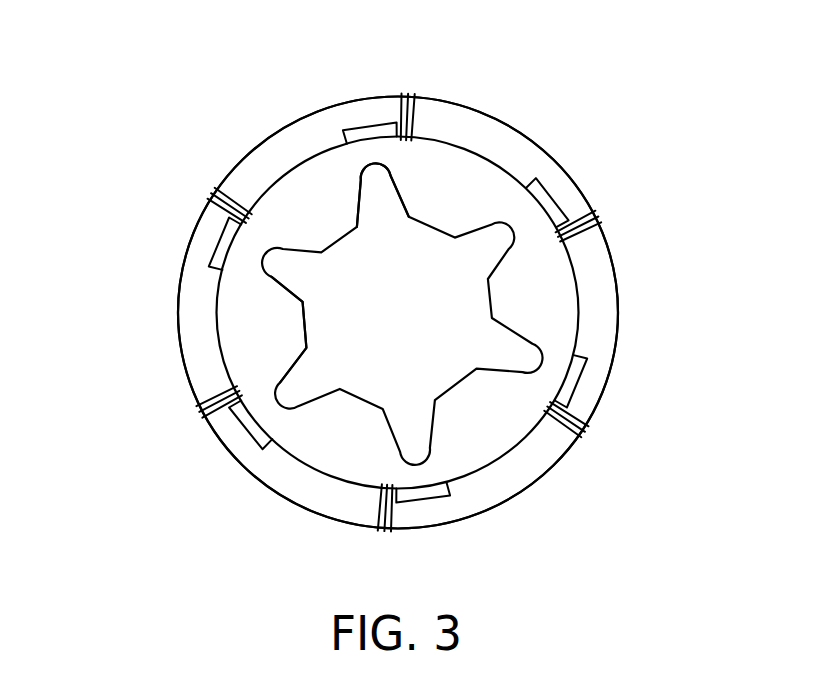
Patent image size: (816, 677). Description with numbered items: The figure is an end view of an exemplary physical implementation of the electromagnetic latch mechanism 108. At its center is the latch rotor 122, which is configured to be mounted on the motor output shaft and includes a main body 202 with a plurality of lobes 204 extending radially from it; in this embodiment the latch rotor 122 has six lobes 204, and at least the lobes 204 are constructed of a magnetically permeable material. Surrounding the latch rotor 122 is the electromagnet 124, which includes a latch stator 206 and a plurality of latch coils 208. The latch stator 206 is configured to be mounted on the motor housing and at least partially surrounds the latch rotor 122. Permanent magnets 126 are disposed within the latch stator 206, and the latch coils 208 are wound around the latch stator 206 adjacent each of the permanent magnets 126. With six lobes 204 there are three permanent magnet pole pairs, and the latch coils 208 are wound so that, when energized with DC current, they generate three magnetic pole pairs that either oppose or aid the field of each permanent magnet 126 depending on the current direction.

The latch mechanism 108 is at (381, 282).
The latch rotor 122 is at (210, 330).
The electromagnet 124 is at (413, 306).
The permanent magnets 126 is at (553, 202).
The main body 202 is at (426, 331).
The lobes 204 is at (400, 207).
The latch stator 206 is at (618, 293).
The latch coils 208 is at (404, 96).